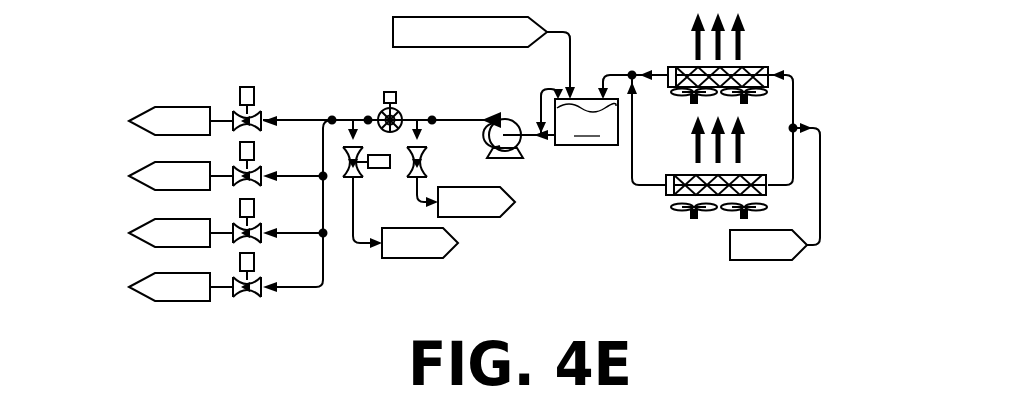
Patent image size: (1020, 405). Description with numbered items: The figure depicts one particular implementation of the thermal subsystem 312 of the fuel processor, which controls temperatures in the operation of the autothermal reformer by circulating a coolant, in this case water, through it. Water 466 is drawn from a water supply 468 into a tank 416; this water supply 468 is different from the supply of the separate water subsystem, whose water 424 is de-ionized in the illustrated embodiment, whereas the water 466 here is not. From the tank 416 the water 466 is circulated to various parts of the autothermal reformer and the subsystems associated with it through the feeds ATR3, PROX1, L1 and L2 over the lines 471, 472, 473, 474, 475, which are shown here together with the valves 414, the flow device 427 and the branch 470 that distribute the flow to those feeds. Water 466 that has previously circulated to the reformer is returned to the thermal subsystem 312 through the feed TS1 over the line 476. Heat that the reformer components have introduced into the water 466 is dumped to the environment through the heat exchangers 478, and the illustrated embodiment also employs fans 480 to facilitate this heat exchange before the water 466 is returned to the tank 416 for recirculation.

The thermal subsystem 312 is at (148, 57).
The valve 414 is at (263, 109).
The tank 416 is at (582, 144).
The water 424 is at (506, 114).
The flow meter 427 is at (397, 93).
The water 466 is at (586, 147).
The water supply 468 is at (393, 48).
The ATR3 autothermal reformer 470 is at (223, 118).
The line 471 is at (223, 173).
The line 472 is at (223, 231).
The line 473 is at (223, 285).
The line 474 is at (356, 250).
The line 475 is at (430, 198).
The line 476 is at (814, 258).
The heat exchangers 478 is at (666, 66).
The fans 480 is at (691, 102).